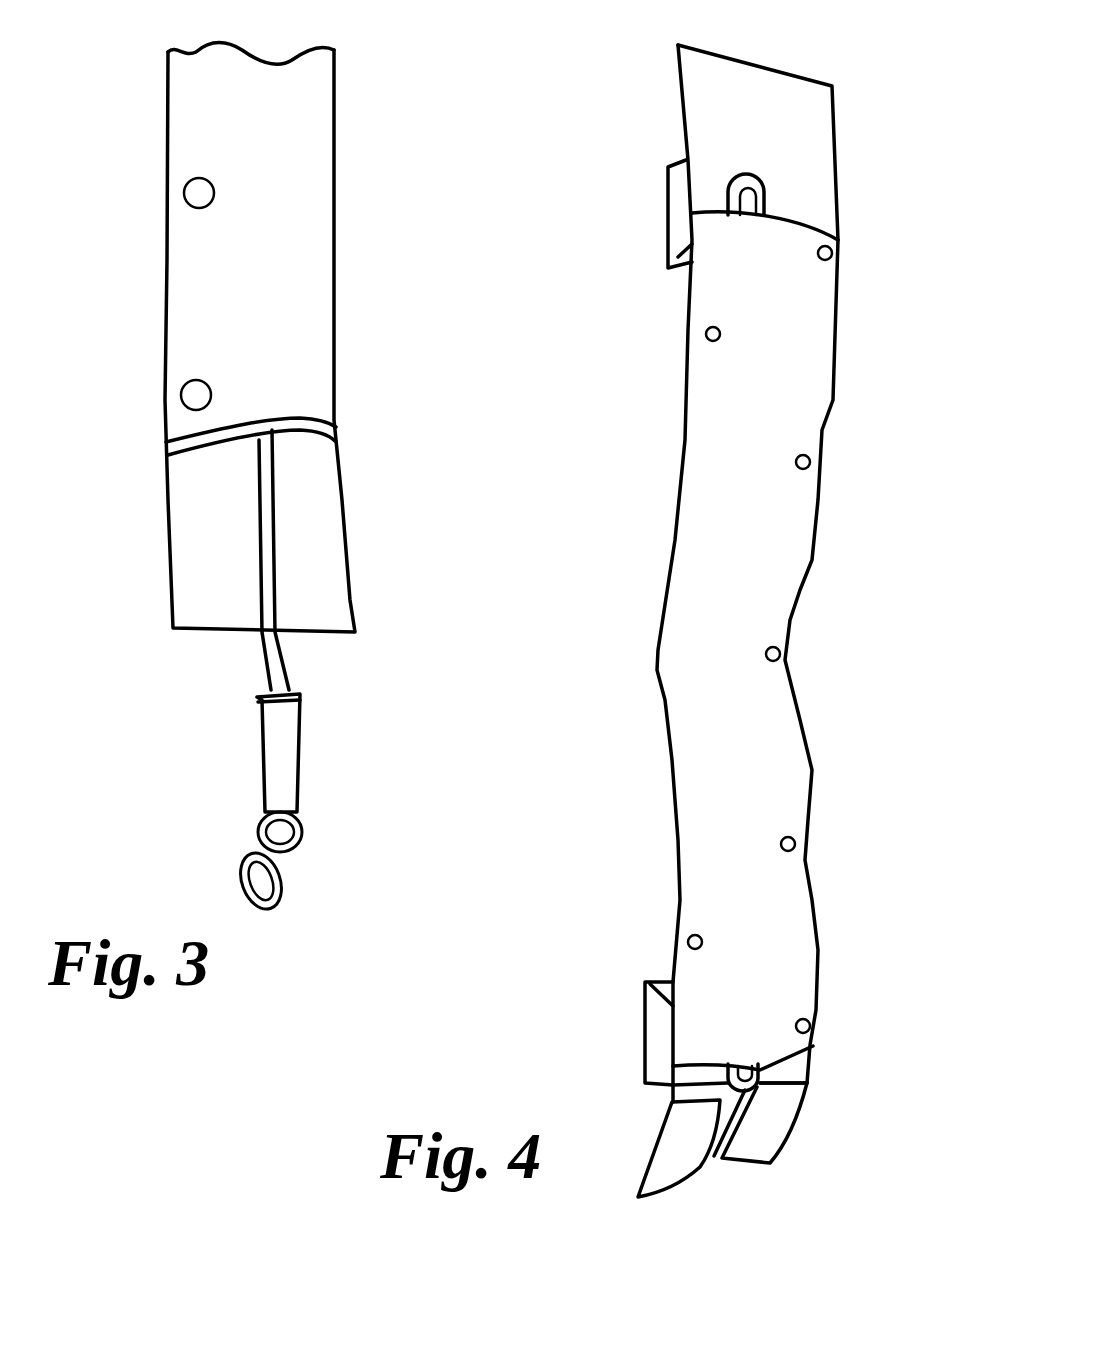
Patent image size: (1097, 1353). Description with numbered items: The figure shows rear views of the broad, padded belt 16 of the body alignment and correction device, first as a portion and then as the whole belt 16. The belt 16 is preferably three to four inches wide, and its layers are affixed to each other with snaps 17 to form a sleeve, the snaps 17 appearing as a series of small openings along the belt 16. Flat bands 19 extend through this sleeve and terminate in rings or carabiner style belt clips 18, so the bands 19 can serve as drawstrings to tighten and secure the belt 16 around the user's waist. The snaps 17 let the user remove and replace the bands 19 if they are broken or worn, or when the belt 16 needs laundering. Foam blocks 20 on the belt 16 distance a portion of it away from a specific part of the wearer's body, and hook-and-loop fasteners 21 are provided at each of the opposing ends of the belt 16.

In FIG. 3, the belt 16 is at (160, 108).
In FIG. 4, the belt 16 is at (678, 100).
In FIG. 3, the snaps 17 is at (190, 382).
In FIG. 4, the snaps 17 is at (808, 456).
In FIG. 3, the rings or carabiner style belt clips 18 is at (258, 862).
In FIG. 4, the rings or carabiner style belt clips 18 is at (770, 183).
In FIG. 3, the flat bands 19 is at (278, 545).
In FIG. 4, the foam blocks 20 is at (668, 215).
In FIG. 4, the hook-and-loop fasteners 21 is at (723, 1100).